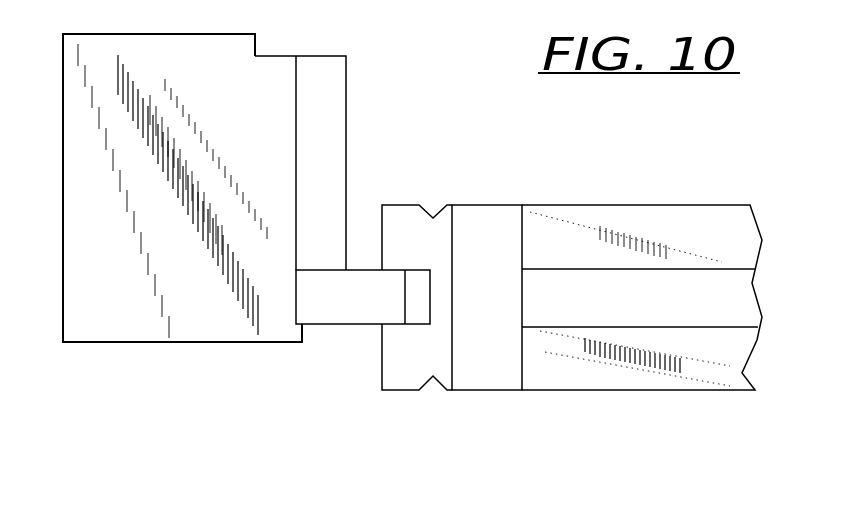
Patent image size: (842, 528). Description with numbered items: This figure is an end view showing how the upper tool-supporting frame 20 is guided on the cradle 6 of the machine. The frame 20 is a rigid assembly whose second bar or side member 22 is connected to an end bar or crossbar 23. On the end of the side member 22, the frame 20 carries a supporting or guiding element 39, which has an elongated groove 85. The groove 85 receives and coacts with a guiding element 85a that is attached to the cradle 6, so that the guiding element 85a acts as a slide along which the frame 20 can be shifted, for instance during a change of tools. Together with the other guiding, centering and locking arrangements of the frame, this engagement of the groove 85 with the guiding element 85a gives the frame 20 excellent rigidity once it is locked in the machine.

The cradle 6 is at (168, 343).
The guiding element 85a is at (363, 285).
The groove 85 is at (415, 305).
The supporting element 39 is at (417, 268).
The second bar or side member 22 is at (420, 352).
The upper tool-supporting frame 20 is at (489, 392).
The end bar or crossbar 23 is at (617, 353).